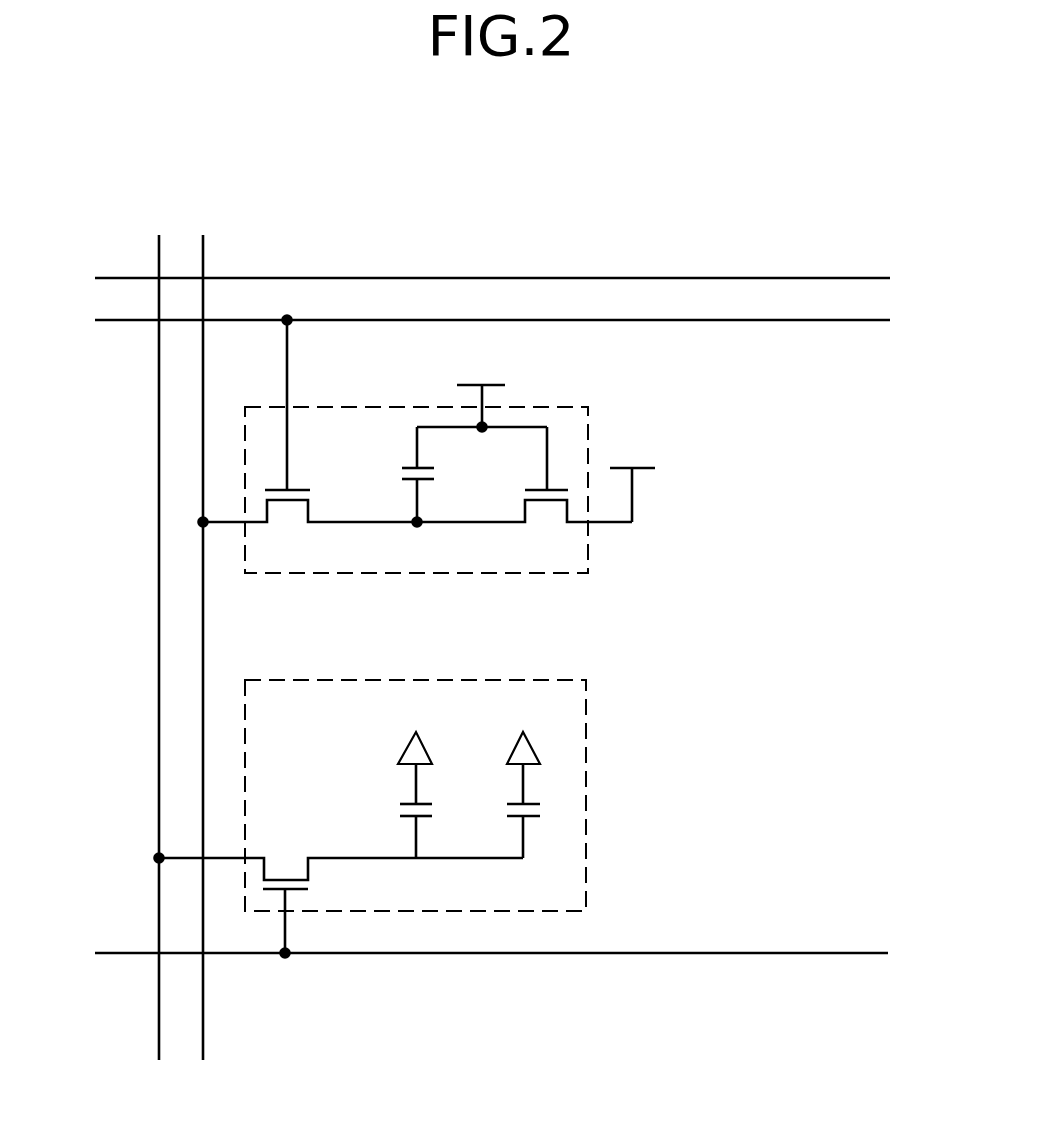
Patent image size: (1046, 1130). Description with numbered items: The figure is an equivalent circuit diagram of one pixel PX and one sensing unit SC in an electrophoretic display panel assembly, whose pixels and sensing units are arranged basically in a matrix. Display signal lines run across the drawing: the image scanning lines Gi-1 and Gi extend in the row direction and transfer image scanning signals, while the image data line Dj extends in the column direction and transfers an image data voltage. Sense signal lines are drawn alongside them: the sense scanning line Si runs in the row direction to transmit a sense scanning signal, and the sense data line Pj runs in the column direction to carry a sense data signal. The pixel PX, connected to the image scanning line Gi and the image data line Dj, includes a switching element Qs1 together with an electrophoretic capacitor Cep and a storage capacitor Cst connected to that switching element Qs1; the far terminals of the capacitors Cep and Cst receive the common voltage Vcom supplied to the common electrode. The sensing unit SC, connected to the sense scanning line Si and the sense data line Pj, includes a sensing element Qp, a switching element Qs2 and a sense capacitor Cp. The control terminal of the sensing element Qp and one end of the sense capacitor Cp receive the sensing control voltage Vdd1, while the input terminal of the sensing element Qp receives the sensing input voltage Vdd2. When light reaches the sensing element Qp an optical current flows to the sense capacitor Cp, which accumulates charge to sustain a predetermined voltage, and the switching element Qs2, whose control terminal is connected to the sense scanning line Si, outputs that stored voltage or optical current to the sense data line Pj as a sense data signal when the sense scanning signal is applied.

The image data line Dj is at (155, 627).
The sense data line Pj is at (198, 666).
The image scanning line Gi-1 is at (461, 278).
The image scanning line Gi is at (459, 952).
The sense scanning line Si is at (510, 320).
The sensing unit SC is at (588, 407).
The pixel PX is at (587, 680).
The switching element Qs2 is at (308, 437).
The sensing element Qp is at (524, 492).
The sense capacitor Cp is at (396, 477).
The sensing control voltage Vdd1 is at (482, 388).
The sensing input voltage Vdd2 is at (630, 475).
The switching element Qs1 is at (339, 890).
The electrophoretic capacitor Cep is at (388, 811).
The storage capacitor Cst is at (496, 811).
The common voltage Vcom is at (466, 727).